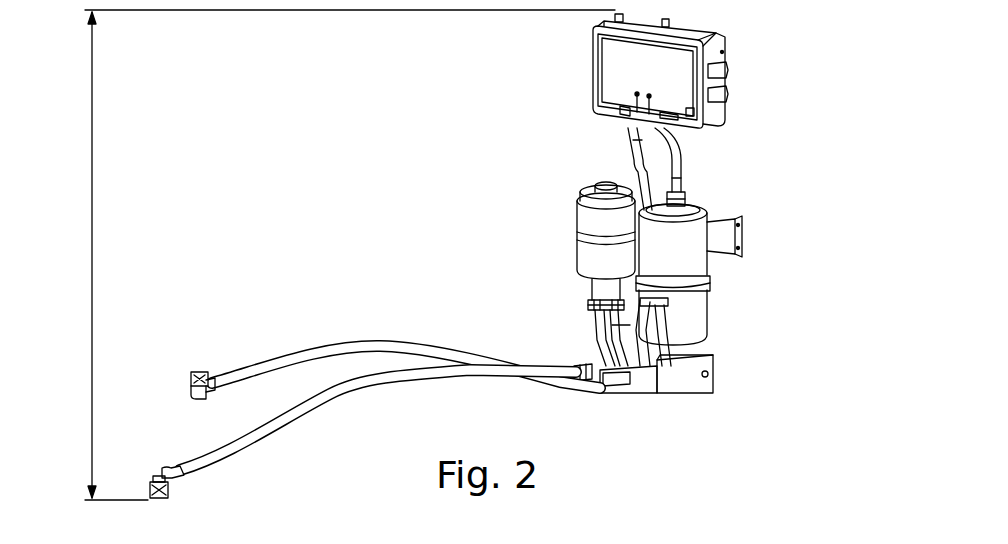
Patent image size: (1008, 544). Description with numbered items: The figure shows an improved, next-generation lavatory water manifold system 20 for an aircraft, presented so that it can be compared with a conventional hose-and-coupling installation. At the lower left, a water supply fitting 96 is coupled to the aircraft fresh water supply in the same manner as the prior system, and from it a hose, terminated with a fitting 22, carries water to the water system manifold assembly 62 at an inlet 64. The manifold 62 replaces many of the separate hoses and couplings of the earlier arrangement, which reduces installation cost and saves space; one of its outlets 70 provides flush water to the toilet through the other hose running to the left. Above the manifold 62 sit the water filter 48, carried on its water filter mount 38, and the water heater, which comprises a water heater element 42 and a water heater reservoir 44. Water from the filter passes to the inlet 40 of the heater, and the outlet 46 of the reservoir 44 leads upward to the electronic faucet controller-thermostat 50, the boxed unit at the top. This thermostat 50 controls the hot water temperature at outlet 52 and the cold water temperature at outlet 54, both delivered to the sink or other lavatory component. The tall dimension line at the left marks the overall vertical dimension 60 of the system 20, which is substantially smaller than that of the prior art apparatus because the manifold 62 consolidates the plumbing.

The water manifold system 20 is at (802, 172).
The fitting 22 is at (170, 498).
The water filter mount 38 is at (586, 302).
The inlet 40 is at (700, 300).
The water heater element 42 is at (708, 330).
The water heater reservoir 44 is at (744, 242).
The outlet 46 is at (690, 200).
The water filter 48 is at (576, 215).
The electronic faucet controller-thermostat 50 is at (592, 52).
The hot water outlet 52 is at (732, 66).
The cold water outlet 54 is at (732, 92).
The overall vertical dimension 60 is at (95, 246).
The water system manifold assembly 62 is at (712, 396).
The inlet 64 is at (580, 364).
The outlet 70 is at (203, 372).
The water supply fitting 96 is at (174, 467).